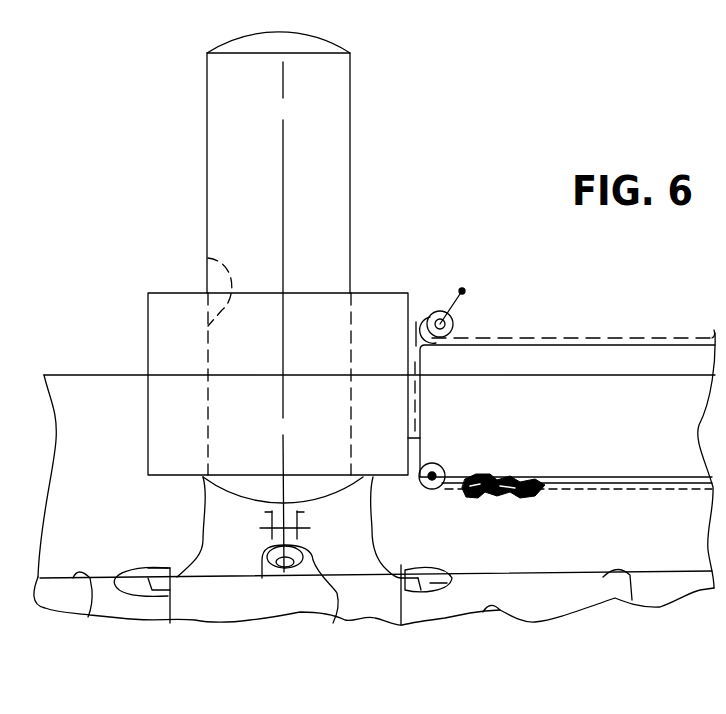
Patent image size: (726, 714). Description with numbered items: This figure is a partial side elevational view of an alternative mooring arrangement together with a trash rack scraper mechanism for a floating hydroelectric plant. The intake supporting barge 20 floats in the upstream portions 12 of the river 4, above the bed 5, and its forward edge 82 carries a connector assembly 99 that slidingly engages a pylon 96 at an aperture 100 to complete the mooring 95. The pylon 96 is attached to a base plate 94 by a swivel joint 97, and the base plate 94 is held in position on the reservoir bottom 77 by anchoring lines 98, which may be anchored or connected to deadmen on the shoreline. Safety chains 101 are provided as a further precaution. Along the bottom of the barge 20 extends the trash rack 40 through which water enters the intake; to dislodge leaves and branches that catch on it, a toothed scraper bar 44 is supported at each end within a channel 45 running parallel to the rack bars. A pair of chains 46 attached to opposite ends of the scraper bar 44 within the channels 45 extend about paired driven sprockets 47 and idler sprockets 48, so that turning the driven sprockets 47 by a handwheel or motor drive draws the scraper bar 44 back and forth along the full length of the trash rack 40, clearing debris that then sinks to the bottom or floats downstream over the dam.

The river 4 is at (92, 390).
The bed 5 is at (495, 610).
The upstream portions 12 is at (94, 557).
The barge 20 is at (628, 431).
The trash rack 40 is at (643, 474).
The toothed scraper bar 44 is at (488, 478).
The channel 45 is at (610, 481).
The chains 46 is at (661, 335).
The driven sprockets 47 is at (455, 319).
The idler sprockets 48 is at (425, 490).
The reservoir bottom 77 is at (368, 614).
The forward edge 82 is at (420, 403).
The base plate 94 is at (240, 612).
The mooring 95 is at (142, 196).
The pylon 96 is at (340, 182).
The swivel joint 97 is at (335, 605).
The anchoring lines 98 is at (88, 608).
The connector assembly 99 is at (162, 305).
The aperture 100 is at (208, 260).
The safety chains 101 is at (201, 512).